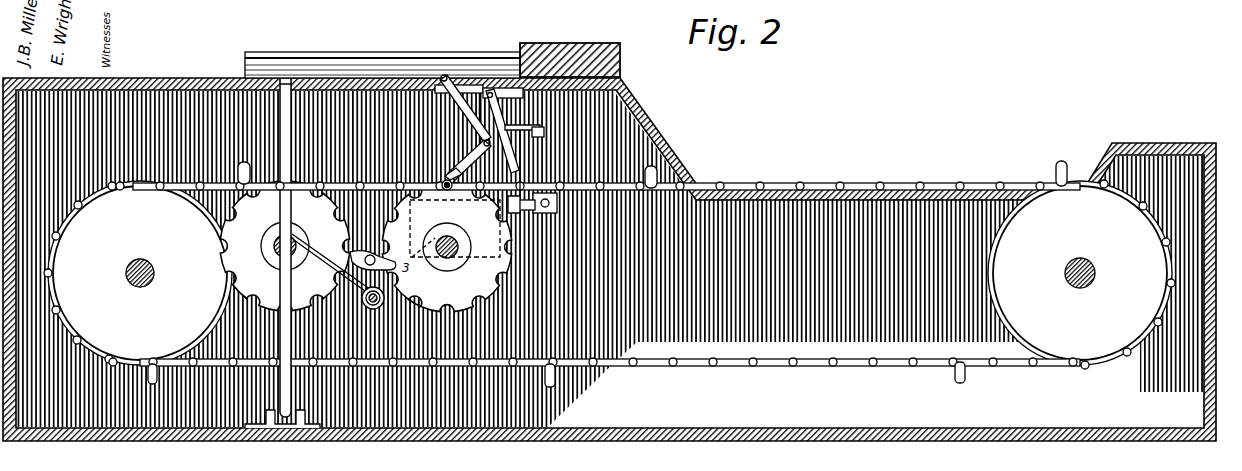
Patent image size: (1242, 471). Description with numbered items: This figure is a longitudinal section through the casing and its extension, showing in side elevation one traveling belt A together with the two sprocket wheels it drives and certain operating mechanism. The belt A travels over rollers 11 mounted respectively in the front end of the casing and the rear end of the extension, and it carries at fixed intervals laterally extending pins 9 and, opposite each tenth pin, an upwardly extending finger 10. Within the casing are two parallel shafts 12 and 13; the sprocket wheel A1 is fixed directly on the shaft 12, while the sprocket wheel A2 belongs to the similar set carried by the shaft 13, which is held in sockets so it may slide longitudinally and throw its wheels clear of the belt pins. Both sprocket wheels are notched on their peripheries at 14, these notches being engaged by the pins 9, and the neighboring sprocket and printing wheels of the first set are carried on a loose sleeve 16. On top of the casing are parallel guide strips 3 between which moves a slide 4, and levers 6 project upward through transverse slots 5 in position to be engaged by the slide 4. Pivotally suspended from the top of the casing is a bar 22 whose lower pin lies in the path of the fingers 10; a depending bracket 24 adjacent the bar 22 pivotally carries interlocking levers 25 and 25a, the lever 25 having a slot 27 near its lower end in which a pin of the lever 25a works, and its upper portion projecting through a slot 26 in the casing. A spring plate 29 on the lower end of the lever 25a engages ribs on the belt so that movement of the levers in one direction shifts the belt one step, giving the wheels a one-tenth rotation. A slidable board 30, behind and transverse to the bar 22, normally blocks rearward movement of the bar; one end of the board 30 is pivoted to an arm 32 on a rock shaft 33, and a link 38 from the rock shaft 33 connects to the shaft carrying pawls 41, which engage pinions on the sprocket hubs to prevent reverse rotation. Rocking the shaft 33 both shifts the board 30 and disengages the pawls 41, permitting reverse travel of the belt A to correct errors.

The guide strips 3 is at (404, 56).
The slide 4 is at (548, 44).
The slots 5 is at (300, 70).
The levers 6 is at (284, 72).
The pins 9 is at (736, 185).
The fingers 10 is at (662, 170).
The rollers 11 is at (143, 234).
The shaft 12 is at (455, 243).
The shaft 13 is at (272, 246).
The notches 14 is at (290, 279).
The sleeve 16 is at (342, 258).
The bars 22 is at (530, 147).
The depending bracket 24 is at (480, 98).
The lever 25 is at (444, 75).
The lever 25a is at (478, 132).
The slot 26 is at (483, 88).
The slot 27 is at (500, 125).
The spring plate 29 is at (452, 168).
The board 30 is at (525, 128).
The arm 32 is at (520, 170).
The rock shaft 33 is at (457, 189).
The link 38 is at (448, 210).
The pawls 41 is at (336, 245).
The traveling belt A is at (875, 183).
The sprocket wheel A1 is at (446, 246).
The sprocket wheel A2 is at (284, 245).